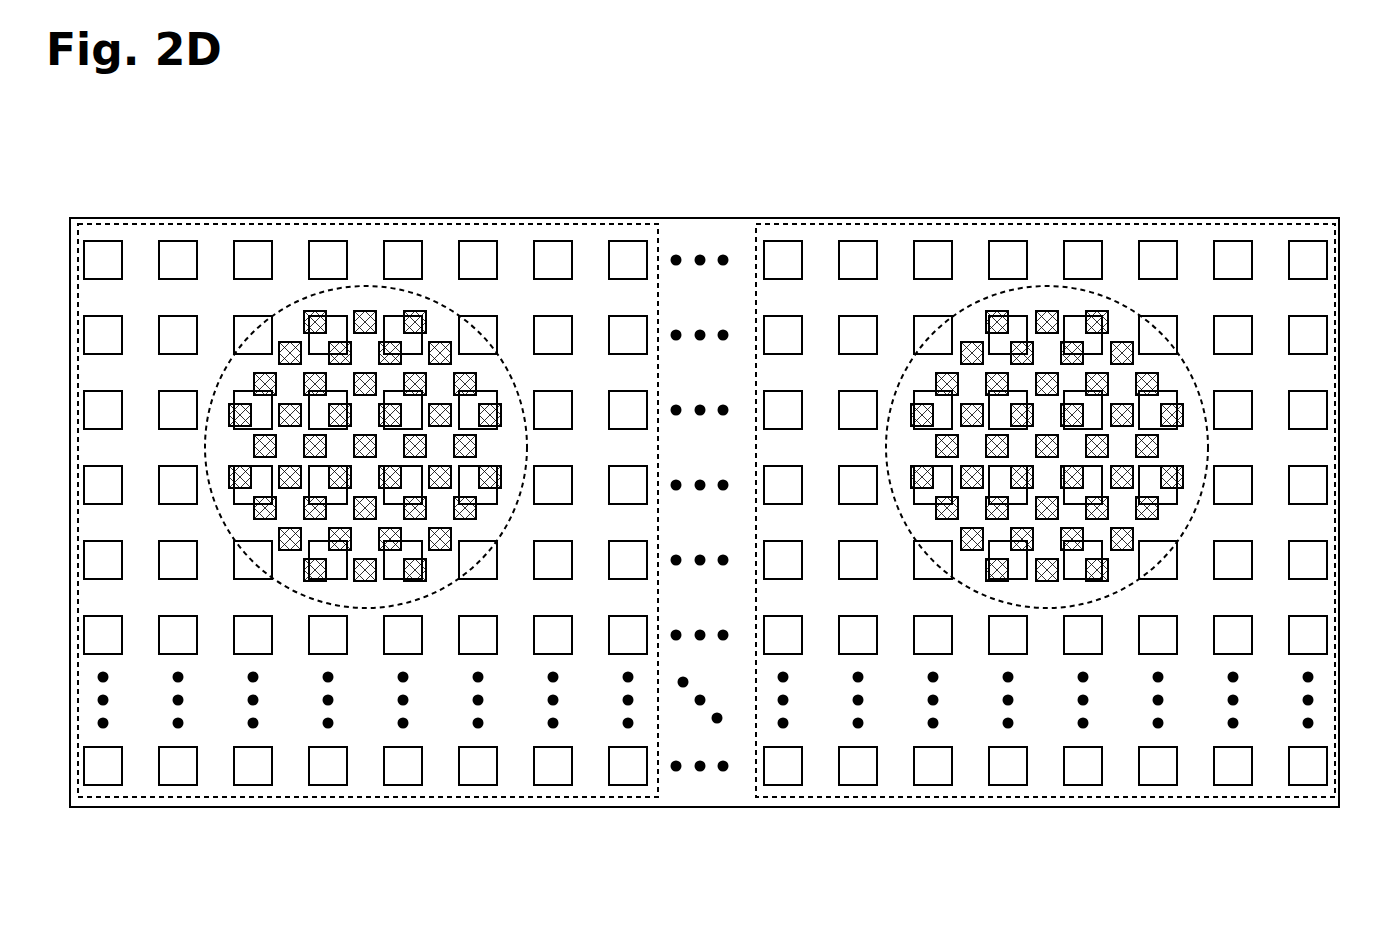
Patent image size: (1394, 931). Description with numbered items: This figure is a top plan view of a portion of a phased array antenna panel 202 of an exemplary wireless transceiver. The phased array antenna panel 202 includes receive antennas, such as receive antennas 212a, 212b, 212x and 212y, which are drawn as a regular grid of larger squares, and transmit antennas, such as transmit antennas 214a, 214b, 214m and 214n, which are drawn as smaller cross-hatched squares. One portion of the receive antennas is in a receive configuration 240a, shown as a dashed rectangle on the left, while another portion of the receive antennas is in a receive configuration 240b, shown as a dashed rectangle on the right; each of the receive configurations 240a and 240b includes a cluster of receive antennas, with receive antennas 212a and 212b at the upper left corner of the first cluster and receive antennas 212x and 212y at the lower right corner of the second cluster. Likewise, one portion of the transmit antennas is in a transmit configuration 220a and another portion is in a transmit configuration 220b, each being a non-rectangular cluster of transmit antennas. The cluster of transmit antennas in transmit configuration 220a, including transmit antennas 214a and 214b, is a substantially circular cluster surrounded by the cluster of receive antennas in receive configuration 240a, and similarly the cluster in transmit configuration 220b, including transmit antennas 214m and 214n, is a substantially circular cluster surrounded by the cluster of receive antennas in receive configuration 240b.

The phased array antenna panel 202 is at (1222, 173).
The receive antenna 212a is at (102, 238).
The receive antenna 212b is at (177, 238).
The receive antenna 212x is at (1238, 787).
The receive antenna 212y is at (1316, 787).
The transmit antenna 214a is at (284, 342).
The transmit antenna 214b is at (304, 318).
The transmit antenna 214m is at (1108, 578).
The transmit antenna 214n is at (1130, 551).
The transmit configuration 220a is at (492, 339).
The transmit configuration 220b is at (1174, 339).
The receive configuration 240a is at (583, 224).
The receive configuration 240b is at (1270, 224).